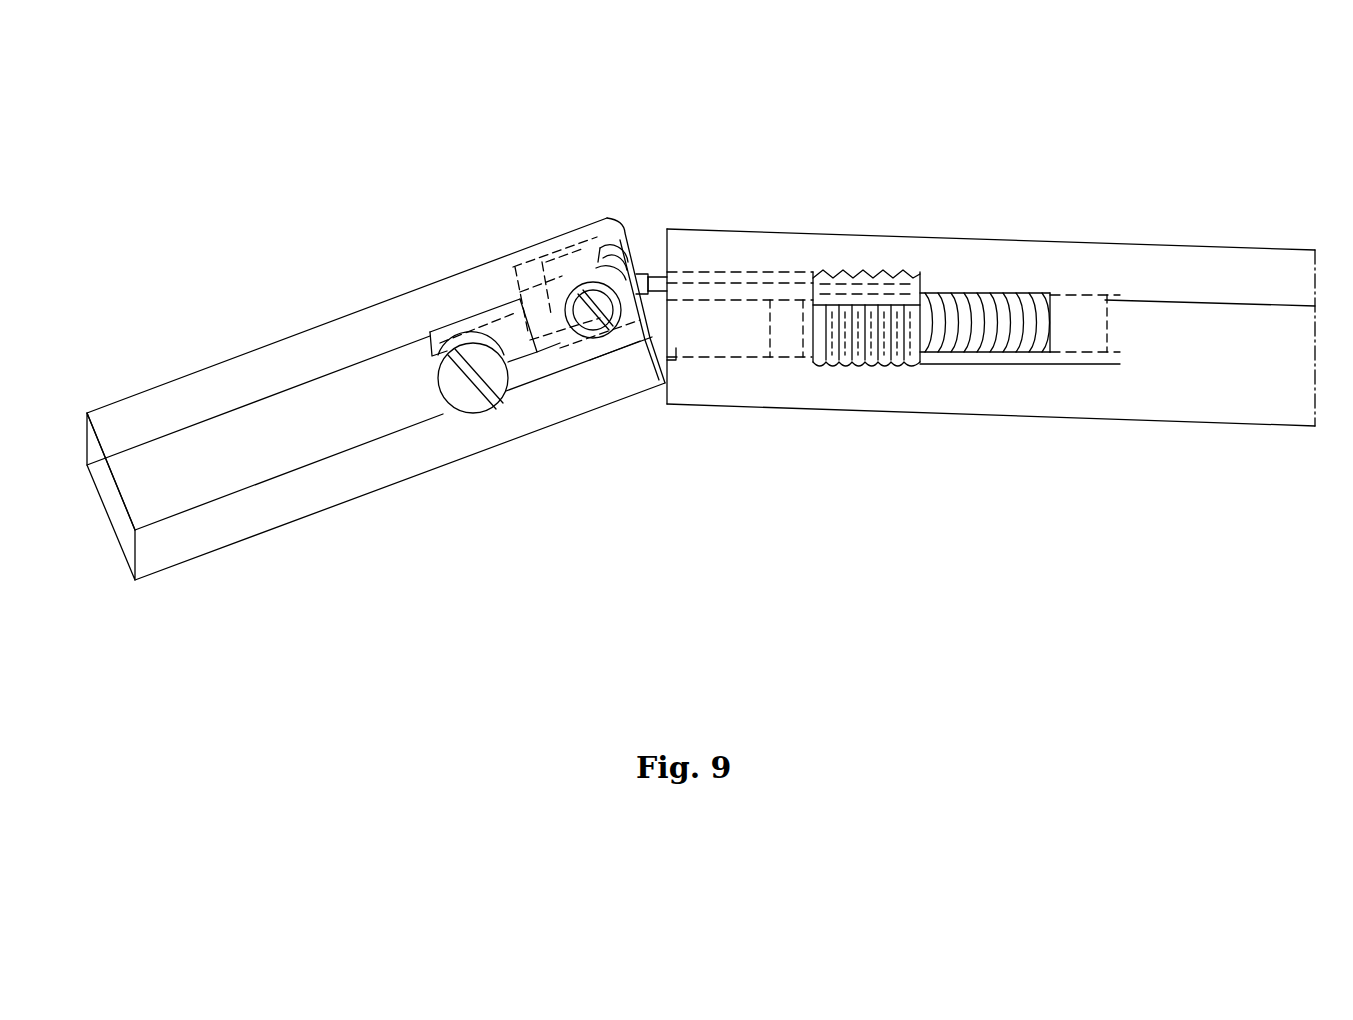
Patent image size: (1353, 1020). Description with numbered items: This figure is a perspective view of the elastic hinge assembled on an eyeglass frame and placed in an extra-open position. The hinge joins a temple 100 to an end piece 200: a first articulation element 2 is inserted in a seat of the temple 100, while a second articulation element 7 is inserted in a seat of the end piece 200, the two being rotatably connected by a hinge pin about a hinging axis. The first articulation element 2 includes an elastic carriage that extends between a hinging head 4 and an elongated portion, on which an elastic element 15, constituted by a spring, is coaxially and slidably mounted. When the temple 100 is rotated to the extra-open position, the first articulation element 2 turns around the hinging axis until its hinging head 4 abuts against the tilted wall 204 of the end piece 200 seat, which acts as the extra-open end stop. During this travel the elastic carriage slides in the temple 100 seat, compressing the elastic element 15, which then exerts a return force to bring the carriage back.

The end piece 200 is at (200, 395).
The second articulation element 7 is at (518, 212).
The hinging head 4 is at (653, 282).
The tilted wall 204 is at (630, 348).
The temple 100 is at (1250, 275).
The first articulation element 2 is at (920, 215).
The elastic element 15 is at (1017, 361).